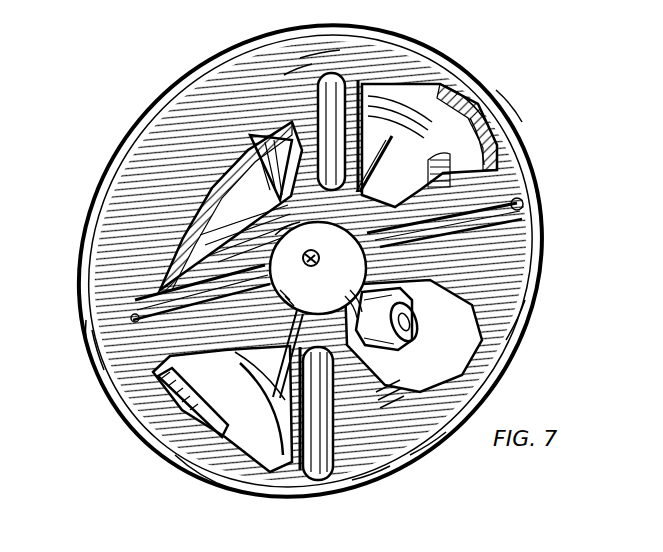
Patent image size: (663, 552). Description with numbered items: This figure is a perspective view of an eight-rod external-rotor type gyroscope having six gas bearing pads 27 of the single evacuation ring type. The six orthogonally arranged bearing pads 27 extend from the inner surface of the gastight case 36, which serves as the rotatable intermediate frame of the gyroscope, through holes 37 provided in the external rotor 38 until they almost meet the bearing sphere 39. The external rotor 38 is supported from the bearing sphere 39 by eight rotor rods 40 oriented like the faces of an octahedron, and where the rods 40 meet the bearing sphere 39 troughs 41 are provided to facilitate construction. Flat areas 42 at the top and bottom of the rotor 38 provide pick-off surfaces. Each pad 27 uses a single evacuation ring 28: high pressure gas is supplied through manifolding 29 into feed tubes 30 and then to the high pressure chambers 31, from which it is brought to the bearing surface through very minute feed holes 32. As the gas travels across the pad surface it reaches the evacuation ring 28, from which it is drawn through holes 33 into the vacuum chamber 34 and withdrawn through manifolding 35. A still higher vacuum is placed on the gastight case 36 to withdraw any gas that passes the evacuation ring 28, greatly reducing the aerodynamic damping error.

The bearing pad 27 is at (290, 130).
The evacuation ring 28 is at (353, 181).
The manifolding 29 is at (358, 66).
The feed tube 30 is at (398, 40).
The high pressure chamber 31 is at (378, 180).
The feed hole 32 is at (318, 268).
The hole 33 is at (225, 188).
The vacuum chamber 34 is at (300, 80).
The manifolding 35 is at (322, 68).
The gastight case 36 is at (522, 114).
The hole 37 is at (262, 136).
The external rotor 38 is at (482, 98).
The bearing sphere 39 is at (319, 273).
The rotor rod 40 is at (168, 239).
The trough 41 is at (321, 280).
The flat area 42 is at (430, 108).